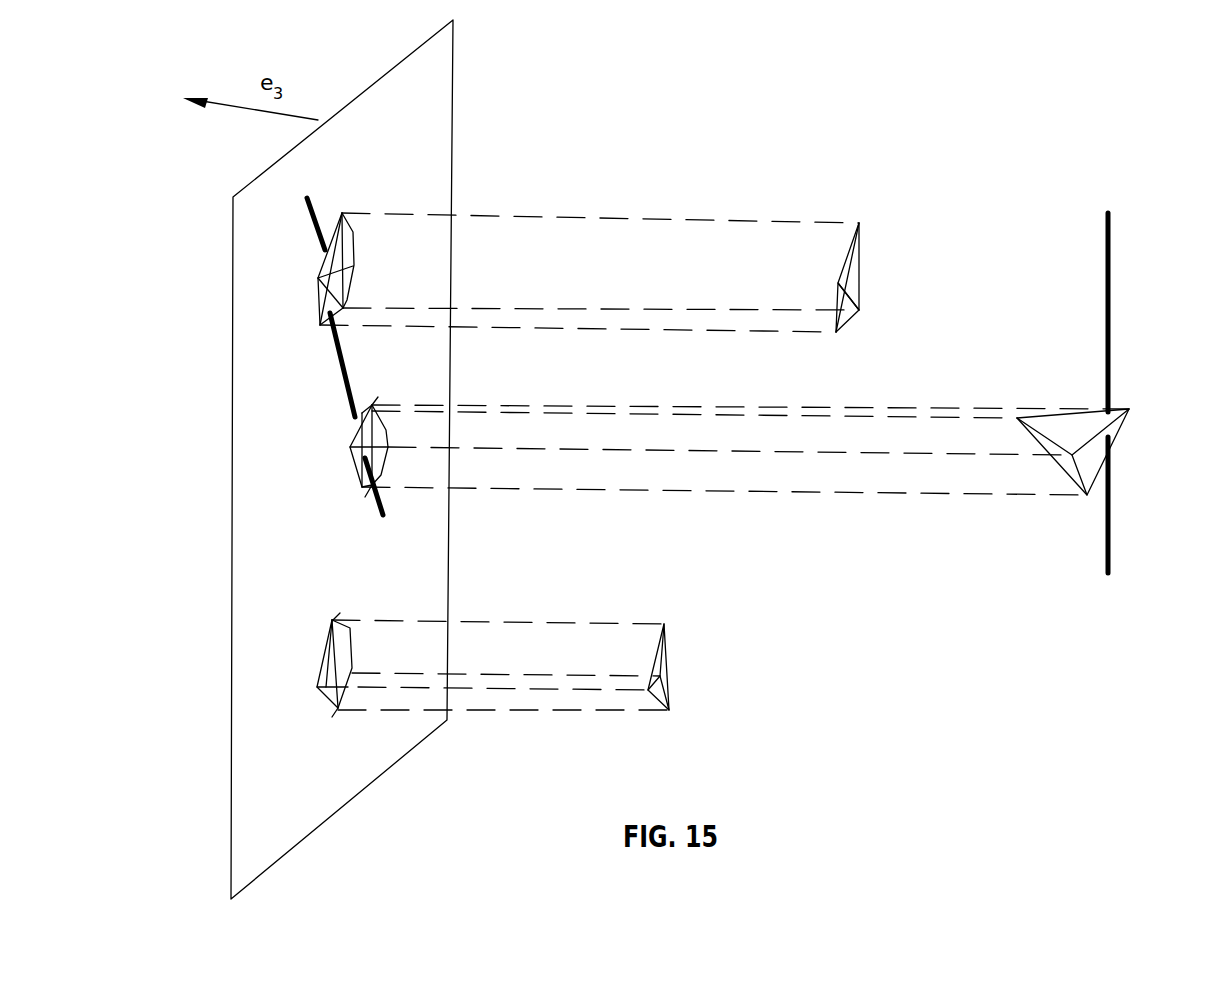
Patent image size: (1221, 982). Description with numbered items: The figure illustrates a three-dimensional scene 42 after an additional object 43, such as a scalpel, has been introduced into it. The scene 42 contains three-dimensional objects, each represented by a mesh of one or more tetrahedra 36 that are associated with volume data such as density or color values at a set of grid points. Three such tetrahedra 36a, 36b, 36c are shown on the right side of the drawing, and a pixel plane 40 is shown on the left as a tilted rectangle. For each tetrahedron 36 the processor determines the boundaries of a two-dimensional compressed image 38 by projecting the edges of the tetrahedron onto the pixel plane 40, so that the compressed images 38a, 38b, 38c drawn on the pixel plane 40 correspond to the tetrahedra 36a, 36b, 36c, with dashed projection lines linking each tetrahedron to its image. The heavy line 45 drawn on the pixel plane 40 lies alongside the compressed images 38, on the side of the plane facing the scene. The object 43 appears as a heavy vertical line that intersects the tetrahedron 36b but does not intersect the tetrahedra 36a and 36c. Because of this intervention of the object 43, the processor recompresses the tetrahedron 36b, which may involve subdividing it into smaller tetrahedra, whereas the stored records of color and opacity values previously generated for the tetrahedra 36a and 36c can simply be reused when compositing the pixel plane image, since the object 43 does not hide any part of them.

The tetrahedra 36 is at (945, 493).
The tetrahedron 36a is at (901, 289).
The tetrahedron 36b is at (1110, 452).
The tetrahedron 36c is at (712, 664).
The compressed image 38 is at (724, 461).
The first projected image 38a is at (379, 269).
The second projected image 38b is at (443, 473).
The third projected image 38c is at (402, 697).
The pixel plane 40 is at (406, 459).
The 3-D scene 42 is at (1045, 157).
The object 43 is at (1159, 393).
The line in image plane 45 is at (284, 424).